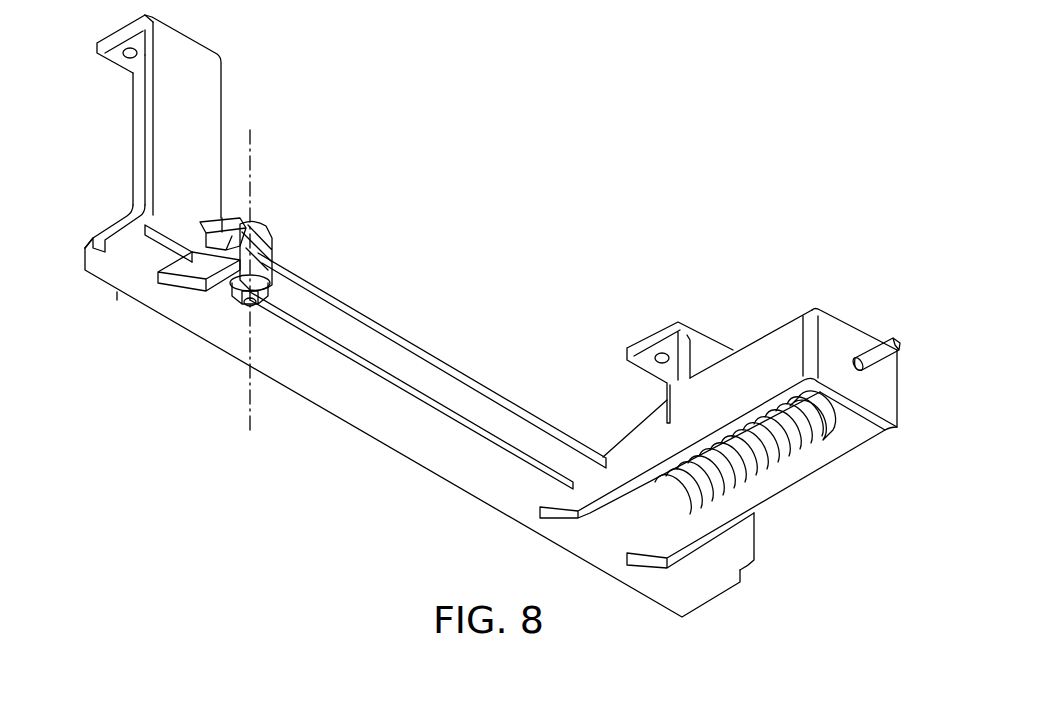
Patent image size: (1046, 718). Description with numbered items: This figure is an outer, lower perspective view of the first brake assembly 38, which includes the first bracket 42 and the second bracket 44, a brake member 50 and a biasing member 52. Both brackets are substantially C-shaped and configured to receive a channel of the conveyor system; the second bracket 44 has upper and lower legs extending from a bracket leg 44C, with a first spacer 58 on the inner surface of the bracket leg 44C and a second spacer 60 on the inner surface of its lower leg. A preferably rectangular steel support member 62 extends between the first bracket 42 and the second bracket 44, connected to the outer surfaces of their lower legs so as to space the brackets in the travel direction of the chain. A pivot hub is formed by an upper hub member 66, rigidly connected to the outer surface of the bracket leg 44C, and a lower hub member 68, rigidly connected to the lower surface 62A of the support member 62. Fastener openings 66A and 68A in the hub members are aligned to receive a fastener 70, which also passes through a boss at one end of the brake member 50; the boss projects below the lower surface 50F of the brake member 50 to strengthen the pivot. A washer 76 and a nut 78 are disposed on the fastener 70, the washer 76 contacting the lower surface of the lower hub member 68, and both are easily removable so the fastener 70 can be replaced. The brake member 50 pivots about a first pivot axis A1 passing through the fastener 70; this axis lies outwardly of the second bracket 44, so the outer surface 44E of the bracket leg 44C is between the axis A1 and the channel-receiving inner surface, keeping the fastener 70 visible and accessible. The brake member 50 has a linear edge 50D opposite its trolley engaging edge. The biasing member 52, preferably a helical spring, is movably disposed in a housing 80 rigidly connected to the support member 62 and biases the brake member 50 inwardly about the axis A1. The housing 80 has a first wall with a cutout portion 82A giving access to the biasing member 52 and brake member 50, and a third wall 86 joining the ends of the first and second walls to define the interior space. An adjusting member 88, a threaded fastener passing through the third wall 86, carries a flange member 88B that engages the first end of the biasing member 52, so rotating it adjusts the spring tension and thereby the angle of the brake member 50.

The first brake assembly 38 is at (483, 308).
The first bracket 42 is at (648, 332).
The second bracket 44 is at (174, 129).
The bracket leg 44C is at (192, 92).
The outer surface 44E is at (177, 133).
The brake member 50 is at (428, 371).
The edge 50D is at (512, 408).
The lower surface 50F is at (342, 330).
The biasing member 52 is at (760, 457).
The first spacer 58 is at (133, 105).
The second spacer 60 is at (112, 222).
The support member 62 is at (717, 602).
The lower surface 62A is at (122, 290).
The upper hub member 66 is at (217, 222).
The fastener opening 66A is at (228, 214).
The lower hub member 68 is at (186, 298).
The fastener opening 68A is at (203, 312).
The fastener 70 is at (268, 228).
The washer 76 is at (264, 293).
The nut 78 is at (250, 303).
The housing 80 is at (734, 421).
The cutout portion 82A is at (630, 448).
The third wall 86 is at (833, 338).
The adjusting member 88 is at (903, 330).
The flange member 88B is at (832, 408).
The first pivot axis A1 is at (252, 147).